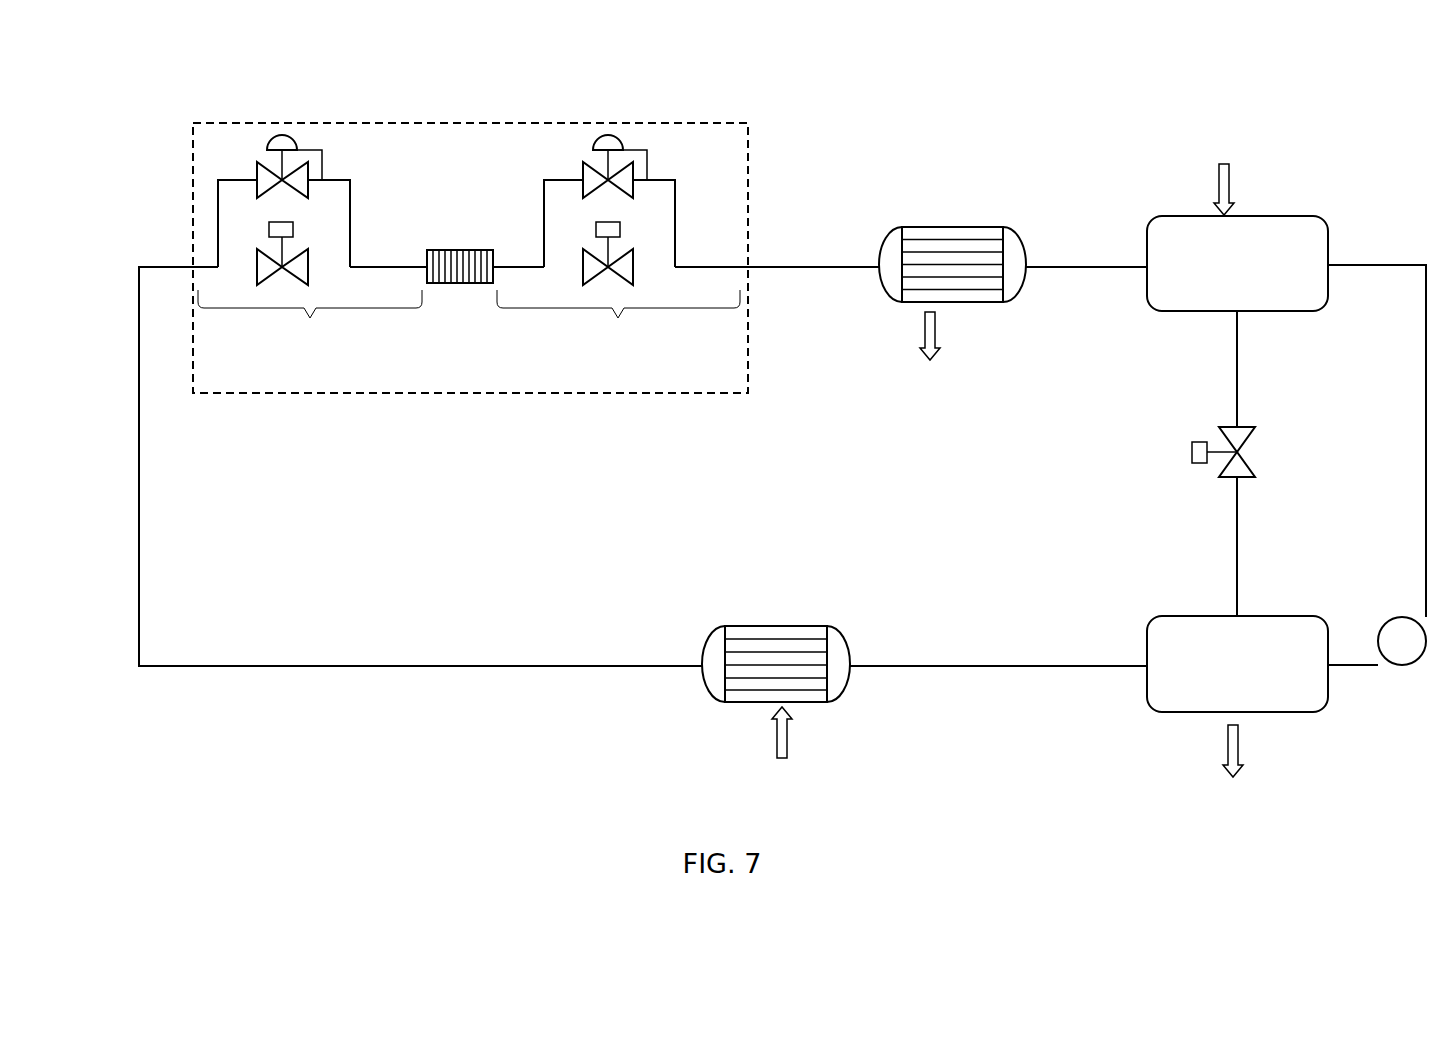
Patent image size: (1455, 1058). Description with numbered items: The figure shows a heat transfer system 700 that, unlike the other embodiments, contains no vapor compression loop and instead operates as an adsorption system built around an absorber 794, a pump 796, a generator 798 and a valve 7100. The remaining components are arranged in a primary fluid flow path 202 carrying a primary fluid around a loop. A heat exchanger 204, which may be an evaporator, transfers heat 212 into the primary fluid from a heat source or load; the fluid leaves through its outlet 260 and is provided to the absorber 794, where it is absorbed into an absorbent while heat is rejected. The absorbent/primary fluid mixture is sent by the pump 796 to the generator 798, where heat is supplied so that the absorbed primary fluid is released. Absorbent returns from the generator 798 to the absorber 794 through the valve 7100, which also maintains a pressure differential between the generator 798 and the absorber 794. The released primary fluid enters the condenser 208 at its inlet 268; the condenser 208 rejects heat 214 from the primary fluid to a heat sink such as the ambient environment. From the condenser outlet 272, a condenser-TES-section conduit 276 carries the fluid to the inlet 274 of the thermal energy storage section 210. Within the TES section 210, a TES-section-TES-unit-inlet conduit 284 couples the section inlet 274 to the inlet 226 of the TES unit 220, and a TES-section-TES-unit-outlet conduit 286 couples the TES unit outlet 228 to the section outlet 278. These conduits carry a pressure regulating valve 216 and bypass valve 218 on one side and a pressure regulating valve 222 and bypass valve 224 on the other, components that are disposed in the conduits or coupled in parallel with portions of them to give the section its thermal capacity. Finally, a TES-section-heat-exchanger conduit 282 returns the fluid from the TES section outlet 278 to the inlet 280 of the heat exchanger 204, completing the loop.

The heat transfer system 700 is at (1176, 145).
The primary fluid flow path 202 is at (393, 676).
The heat exchanger 204 is at (775, 623).
The condenser 208 is at (951, 224).
The thermal energy storage section 210 is at (433, 394).
The heat 212 is at (800, 735).
The heat 214 is at (953, 345).
The pressure regulating valve 216 is at (583, 139).
The bypass valve 218 is at (646, 286).
The TES unit 220 is at (458, 248).
The pressure regulating valve 222 is at (245, 154).
The bypass valve 224 is at (245, 249).
The inlet 226 is at (497, 274).
The outlet 228 is at (418, 274).
The outlet 260 is at (852, 656).
The inlet 268 is at (1033, 273).
The outlet 272 is at (871, 279).
The inlet 274 is at (757, 271).
The condenser-TES-section conduit 276 is at (818, 264).
The outlet 278 is at (181, 272).
The inlet 280 is at (698, 657).
The TES-section-heat-exchanger conduit 282 is at (160, 669).
The TES-section-TES-unit-inlet conduit 284 is at (631, 253).
The TES-section-TES-unit-outlet conduit 286 is at (265, 234).
The absorber 794 is at (1220, 667).
The pump 796 is at (1417, 667).
The generator 798 is at (1213, 262).
The valve 7100 is at (1253, 452).